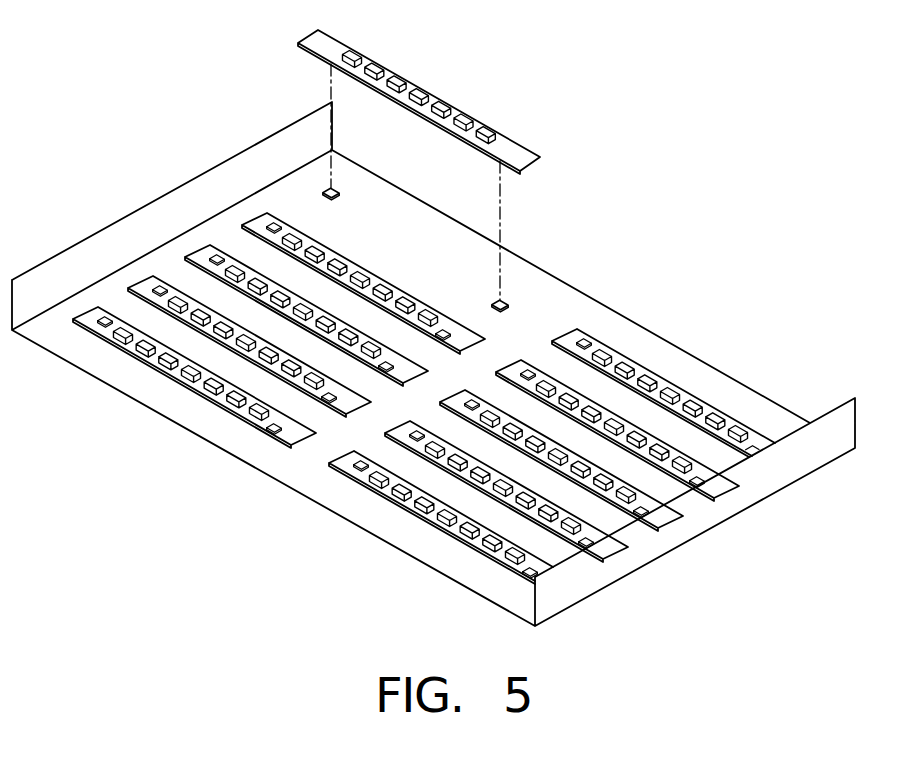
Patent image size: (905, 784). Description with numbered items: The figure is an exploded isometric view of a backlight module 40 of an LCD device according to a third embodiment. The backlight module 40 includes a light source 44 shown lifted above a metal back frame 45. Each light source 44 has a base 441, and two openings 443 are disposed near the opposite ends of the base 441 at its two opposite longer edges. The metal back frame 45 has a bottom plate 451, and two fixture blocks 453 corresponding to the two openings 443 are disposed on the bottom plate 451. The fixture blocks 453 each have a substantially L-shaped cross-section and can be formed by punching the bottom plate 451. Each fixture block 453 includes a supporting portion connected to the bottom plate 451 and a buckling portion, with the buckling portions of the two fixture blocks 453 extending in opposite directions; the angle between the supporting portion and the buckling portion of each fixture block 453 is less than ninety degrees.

The backlight module 40 is at (564, 48).
The light source 44 is at (472, 99).
The base 441 is at (507, 144).
The openings 443 is at (339, 41).
The metal back frame 45 is at (745, 366).
The bottom plate 451 is at (640, 347).
The fixture blocks 453 is at (328, 190).